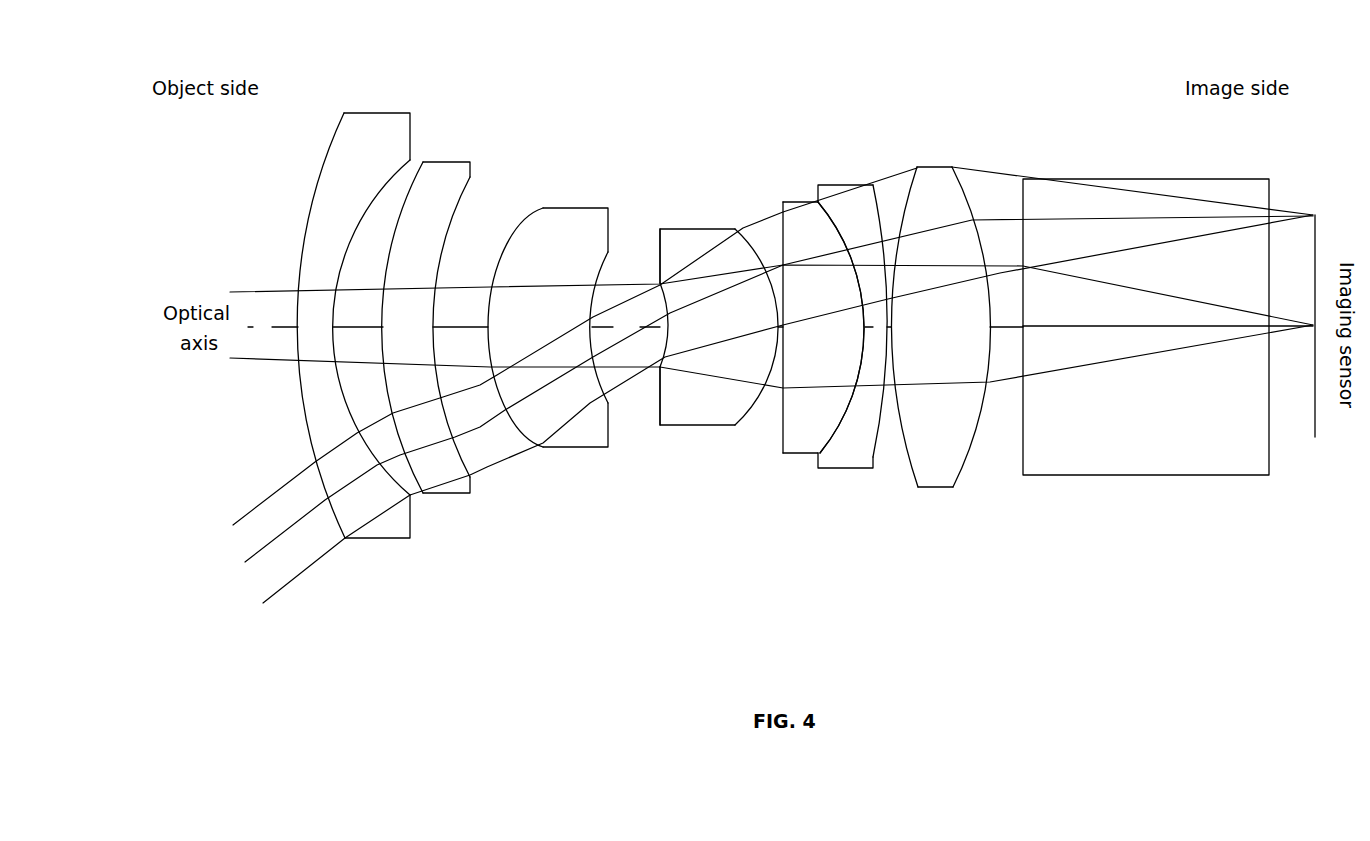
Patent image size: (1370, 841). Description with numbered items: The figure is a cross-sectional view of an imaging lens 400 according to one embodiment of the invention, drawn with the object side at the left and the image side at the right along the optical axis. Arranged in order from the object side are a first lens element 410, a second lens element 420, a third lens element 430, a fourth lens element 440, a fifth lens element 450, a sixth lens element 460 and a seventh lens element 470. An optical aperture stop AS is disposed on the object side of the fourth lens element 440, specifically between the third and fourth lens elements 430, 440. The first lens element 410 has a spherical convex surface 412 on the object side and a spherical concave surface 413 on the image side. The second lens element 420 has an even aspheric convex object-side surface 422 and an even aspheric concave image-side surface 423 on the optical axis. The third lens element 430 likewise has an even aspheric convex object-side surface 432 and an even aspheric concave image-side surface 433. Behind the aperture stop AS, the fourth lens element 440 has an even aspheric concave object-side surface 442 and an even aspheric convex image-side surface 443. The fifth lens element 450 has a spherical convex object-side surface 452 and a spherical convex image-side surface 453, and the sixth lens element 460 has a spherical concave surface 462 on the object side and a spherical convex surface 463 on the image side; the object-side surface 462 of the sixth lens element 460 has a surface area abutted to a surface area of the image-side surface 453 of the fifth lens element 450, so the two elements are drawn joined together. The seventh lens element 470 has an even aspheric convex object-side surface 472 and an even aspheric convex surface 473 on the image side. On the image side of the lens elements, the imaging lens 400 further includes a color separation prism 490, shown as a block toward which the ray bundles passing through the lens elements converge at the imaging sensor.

The imaging lens 400 is at (1042, 62).
The first lens element 410 is at (323, 312).
The spherical convex surface 412 is at (320, 168).
The spherical concave surface 413 is at (345, 247).
The second lens element 420 is at (419, 313).
The even aspheric convex object-side surface 422 is at (382, 350).
The even aspheric concave image-side surface 423 is at (442, 260).
The third lens element 430 is at (558, 316).
The even aspheric convex object-side surface 432 is at (503, 393).
The even aspheric concave image-side surface 433 is at (595, 368).
The optical aperture stop AS is at (652, 283).
The fourth lens element 440 is at (690, 286).
The even aspheric concave object-side surface 442 is at (665, 302).
The even aspheric convex image-side surface 443 is at (763, 263).
The fifth lens element 450 is at (784, 363).
The spherical convex object-side surface 452 is at (783, 397).
The spherical convex image-side surface 453 is at (837, 425).
The sixth lens element 460 is at (829, 314).
The spherical concave surface 462 is at (853, 390).
The spherical convex surface 463 is at (880, 218).
The seventh lens element 470 is at (941, 337).
The even aspheric convex object-side surface 472 is at (912, 467).
The even aspheric convex surface 473 is at (973, 420).
The color separation prism 490 is at (1212, 446).